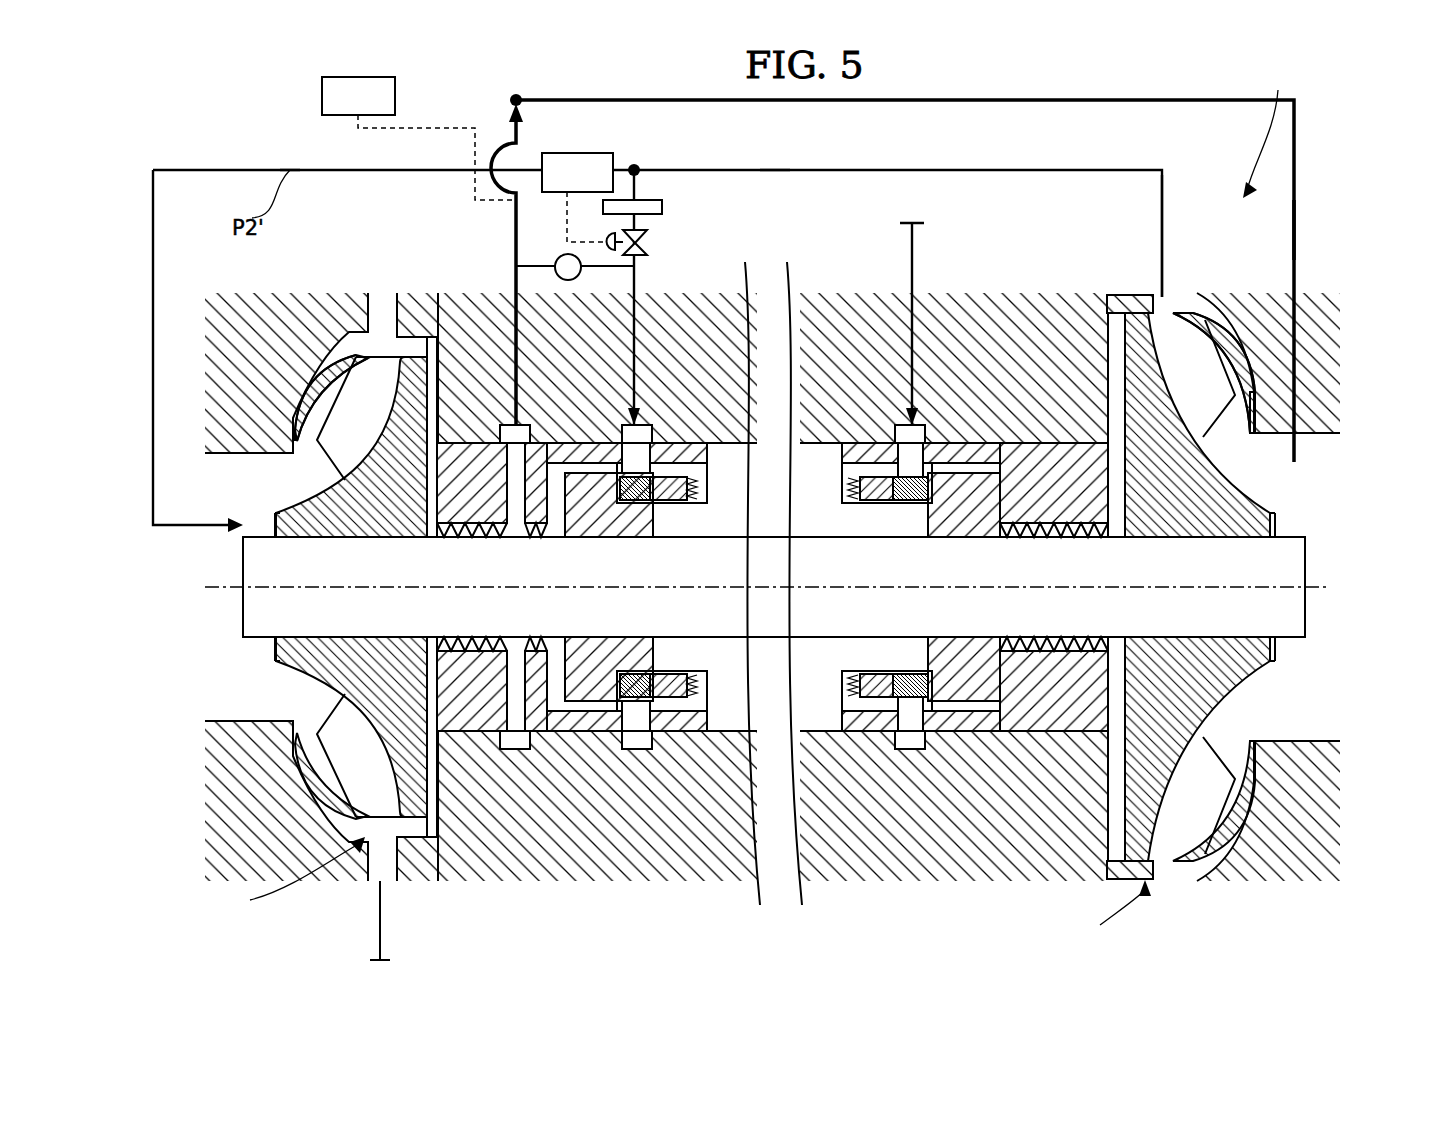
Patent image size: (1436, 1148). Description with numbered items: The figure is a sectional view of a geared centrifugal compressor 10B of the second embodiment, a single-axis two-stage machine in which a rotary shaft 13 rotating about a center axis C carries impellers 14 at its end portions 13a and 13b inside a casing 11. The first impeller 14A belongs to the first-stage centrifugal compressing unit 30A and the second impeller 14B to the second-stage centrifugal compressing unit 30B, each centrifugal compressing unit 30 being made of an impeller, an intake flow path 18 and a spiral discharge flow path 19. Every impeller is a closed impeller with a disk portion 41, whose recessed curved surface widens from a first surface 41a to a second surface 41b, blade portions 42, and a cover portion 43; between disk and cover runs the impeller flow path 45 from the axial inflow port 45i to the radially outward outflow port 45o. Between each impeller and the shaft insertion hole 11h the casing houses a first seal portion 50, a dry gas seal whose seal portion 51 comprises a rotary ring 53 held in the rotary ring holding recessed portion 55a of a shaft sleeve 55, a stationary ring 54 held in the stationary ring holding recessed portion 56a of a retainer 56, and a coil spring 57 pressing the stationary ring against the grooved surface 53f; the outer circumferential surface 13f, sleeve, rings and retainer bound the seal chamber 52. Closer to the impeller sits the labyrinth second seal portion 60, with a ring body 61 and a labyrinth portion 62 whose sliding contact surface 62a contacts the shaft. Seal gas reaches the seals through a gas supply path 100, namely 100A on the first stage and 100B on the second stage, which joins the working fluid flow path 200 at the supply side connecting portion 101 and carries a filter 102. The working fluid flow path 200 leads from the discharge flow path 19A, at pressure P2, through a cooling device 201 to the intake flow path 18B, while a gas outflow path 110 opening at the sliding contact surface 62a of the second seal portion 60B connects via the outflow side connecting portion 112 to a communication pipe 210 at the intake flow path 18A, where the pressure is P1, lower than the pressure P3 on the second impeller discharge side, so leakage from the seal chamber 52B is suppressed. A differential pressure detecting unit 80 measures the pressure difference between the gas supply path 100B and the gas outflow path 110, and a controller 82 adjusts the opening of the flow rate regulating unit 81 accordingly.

The geared centrifugal compressor 10B is at (1273, 130).
The casing 11 is at (1003, 320).
The shaft insertion hole 11h is at (838, 443).
The rotary shaft 13 is at (1290, 640).
The end portion 13a is at (1305, 540).
The end portion 13b is at (243, 637).
The outer circumferential surface 13f is at (547, 535).
The impeller 14 is at (772, 839).
The first impeller 14A is at (1240, 862).
The second impeller 14B is at (470, 860).
The intake flow path 18 is at (782, 355).
The intake flow path 18A is at (1260, 443).
The intake flow path 18B is at (210, 465).
The discharge flow path 19 is at (380, 357).
The discharge flow path 19A is at (1178, 298).
The centrifugal compressing unit 30 is at (657, 893).
The first-stage centrifugal compressing unit 30A is at (1101, 915).
The second-stage centrifugal compressing unit 30B is at (264, 881).
The disk portion 41 is at (345, 690).
The first surface 41a is at (277, 525).
The second surface 41b is at (420, 825).
The blade portion 42 is at (330, 730).
The cover portion 43 is at (340, 800).
The impeller flow path 45 is at (330, 762).
The inflow port 45i is at (333, 472).
The outflow port 45o is at (340, 365).
The first seal portion 50 is at (687, 425).
The seal portion 51 is at (672, 525).
The seal chamber 52 is at (747, 334).
The seal chamber 52B is at (597, 334).
The rotary ring 53 is at (638, 505).
The surface 53f is at (690, 468).
The stationary ring 54 is at (642, 503).
The shaft sleeve 55 is at (572, 468).
The rotary ring holding recessed portion 55a is at (618, 425).
The retainer 56 is at (703, 500).
The stationary ring holding recessed portion 56a is at (697, 503).
The coil spring 57 is at (672, 500).
The second seal portion 60 is at (733, 409).
The second seal portion 60B is at (455, 441).
The ring body 61 is at (455, 480).
The labyrinth portion 62 is at (500, 535).
The sliding contact surface 62a is at (445, 535).
The differential pressure detecting unit 80 is at (574, 255).
The flow rate regulating unit 81 is at (650, 250).
The controller 82 is at (322, 96).
The gas supply path 100 is at (590, 537).
The gas supply path 100A is at (915, 223).
The gas supply path 100B is at (640, 166).
The supply side connecting portion 101 is at (667, 160).
The filter 102 is at (665, 207).
The gas outflow path 110 is at (500, 200).
The outflow side connecting portion 112 is at (510, 100).
The working fluid flow path 200 is at (925, 170).
The cooling device 201 is at (592, 150).
The communication pipe 210 is at (900, 100).
The pressure P1 is at (1294, 222).
The pressure P2 is at (773, 175).
The pressure P3 is at (392, 940).
The center axis C is at (1300, 595).